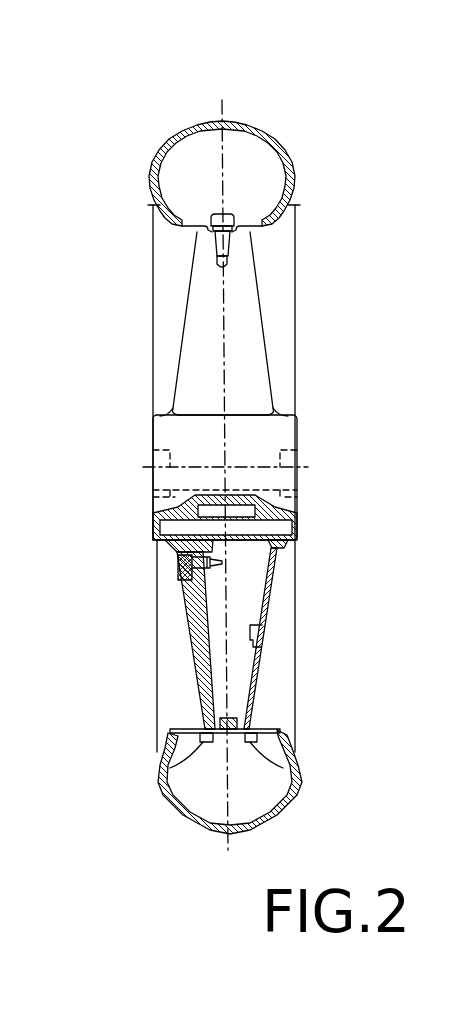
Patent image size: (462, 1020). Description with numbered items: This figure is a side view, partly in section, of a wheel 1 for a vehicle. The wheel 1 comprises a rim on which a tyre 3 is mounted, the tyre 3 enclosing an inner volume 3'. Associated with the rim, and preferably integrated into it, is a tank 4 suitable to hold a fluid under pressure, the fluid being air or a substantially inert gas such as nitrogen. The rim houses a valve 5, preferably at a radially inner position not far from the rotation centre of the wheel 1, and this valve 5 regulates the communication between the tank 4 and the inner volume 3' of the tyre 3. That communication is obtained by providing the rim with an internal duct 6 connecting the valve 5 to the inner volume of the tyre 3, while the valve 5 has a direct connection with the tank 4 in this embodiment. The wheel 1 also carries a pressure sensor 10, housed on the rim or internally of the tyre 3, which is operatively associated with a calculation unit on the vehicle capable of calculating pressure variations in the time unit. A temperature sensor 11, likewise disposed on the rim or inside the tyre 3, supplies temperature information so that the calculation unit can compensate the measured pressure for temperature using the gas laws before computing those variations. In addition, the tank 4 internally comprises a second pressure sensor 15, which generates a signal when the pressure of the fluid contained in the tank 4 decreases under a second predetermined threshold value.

The wheel 1 is at (360, 181).
The tyre 3 is at (281, 782).
The inner volume 3' is at (184, 784).
The tank 4 is at (252, 604).
The valve 5 is at (162, 560).
The internal duct 6 is at (200, 658).
The pressure sensor 10 is at (297, 756).
The temperature sensor 11 is at (167, 762).
The second pressure sensor 15 is at (252, 628).